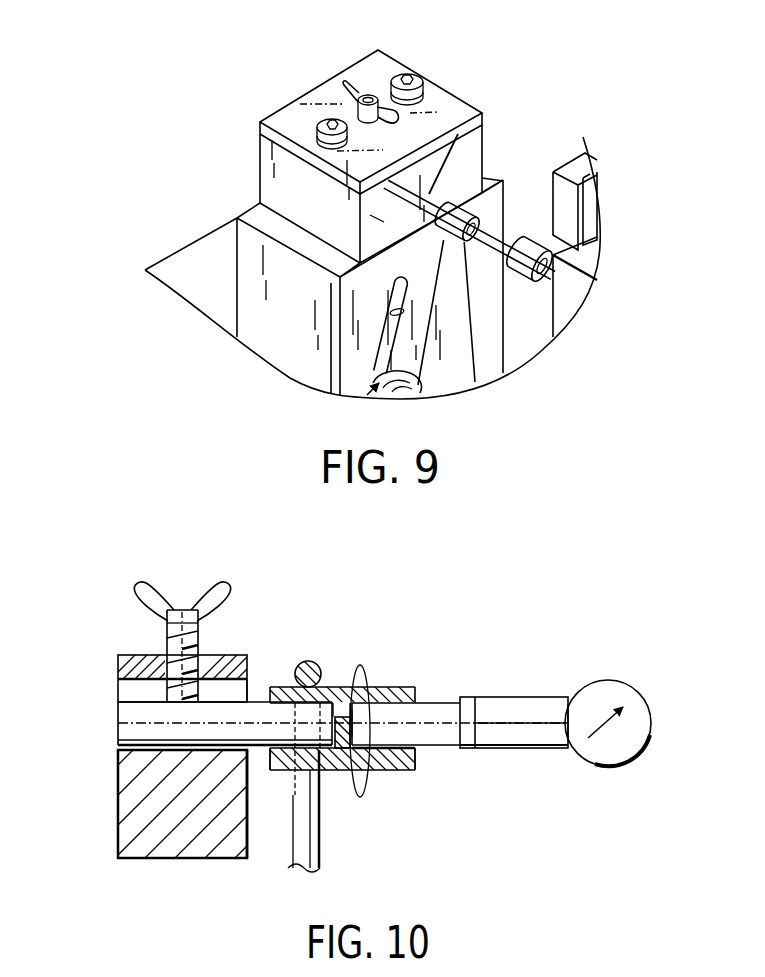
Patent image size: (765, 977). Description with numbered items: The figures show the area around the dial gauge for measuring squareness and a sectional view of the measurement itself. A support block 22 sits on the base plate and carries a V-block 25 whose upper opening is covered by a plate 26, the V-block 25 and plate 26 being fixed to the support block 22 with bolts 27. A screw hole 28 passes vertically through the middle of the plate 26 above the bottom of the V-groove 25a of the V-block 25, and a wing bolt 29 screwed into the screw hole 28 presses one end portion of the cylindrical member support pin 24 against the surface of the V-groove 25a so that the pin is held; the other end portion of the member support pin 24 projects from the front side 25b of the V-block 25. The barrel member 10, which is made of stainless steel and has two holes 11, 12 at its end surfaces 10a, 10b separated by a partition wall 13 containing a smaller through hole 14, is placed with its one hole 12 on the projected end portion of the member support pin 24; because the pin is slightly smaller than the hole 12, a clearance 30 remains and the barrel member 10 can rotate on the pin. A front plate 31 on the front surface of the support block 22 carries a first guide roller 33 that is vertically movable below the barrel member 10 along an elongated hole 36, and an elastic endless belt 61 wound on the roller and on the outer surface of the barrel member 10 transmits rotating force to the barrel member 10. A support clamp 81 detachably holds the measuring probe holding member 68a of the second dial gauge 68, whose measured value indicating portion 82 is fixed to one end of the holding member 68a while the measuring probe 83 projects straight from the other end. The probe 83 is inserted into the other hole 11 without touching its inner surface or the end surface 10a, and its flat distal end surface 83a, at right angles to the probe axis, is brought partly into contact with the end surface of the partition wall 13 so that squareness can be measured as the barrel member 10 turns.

In FIG. 9, the barrel member 10 is at (478, 220).
In FIG. 10, the barrel member 10 is at (383, 687).
In FIG. 10, the end surface 10a is at (415, 749).
In FIG. 10, the end surface 10b is at (247, 755).
In FIG. 10, the hole 11 is at (407, 753).
In FIG. 10, the hole 12 is at (282, 687).
In FIG. 10, the partition wall 13 is at (340, 710).
In FIG. 10, the through hole 14 is at (349, 782).
In FIG. 9, the support block 22 is at (273, 275).
In FIG. 9, the cylindrical member support pin 24 is at (438, 218).
In FIG. 10, the cylindrical member support pin 24 is at (132, 713).
In FIG. 9, the V-block 25 is at (273, 177).
In FIG. 10, the V-block 25 is at (130, 815).
In FIG. 9, the V-groove 25a is at (428, 168).
In FIG. 10, the V-groove 25a is at (165, 740).
In FIG. 9, the front side 25b is at (382, 222).
In FIG. 10, the front side 25b is at (250, 690).
In FIG. 9, the plate 26 is at (380, 60).
In FIG. 10, the plate 26 is at (223, 655).
In FIG. 9, the bolts 27 is at (320, 118).
In FIG. 10, the screw hole 28 is at (177, 657).
In FIG. 9, the wing bolt 29 is at (347, 98).
In FIG. 10, the wing bolt 29 is at (155, 592).
In FIG. 10, the clearance 30 is at (270, 773).
In FIG. 9, the front plate 31 is at (347, 350).
In FIG. 9, the first guide roller 33 is at (377, 387).
In FIG. 9, the elongated hole 36 is at (394, 314).
In FIG. 9, the elastic endless belt 61 is at (425, 357).
In FIG. 10, the elastic endless belt 61 is at (322, 857).
In FIG. 10, the second dial gauge 68 is at (578, 670).
In FIG. 9, the measuring probe holding member 68a is at (552, 295).
In FIG. 10, the measuring probe holding member 68a is at (533, 733).
In FIG. 9, the support clamp 81 is at (573, 167).
In FIG. 10, the measured value indicating portion 82 is at (650, 717).
In FIG. 9, the measuring probe 83 is at (532, 290).
In FIG. 10, the measuring probe 83 is at (447, 690).
In FIG. 10, the distal end surface 83a is at (352, 727).